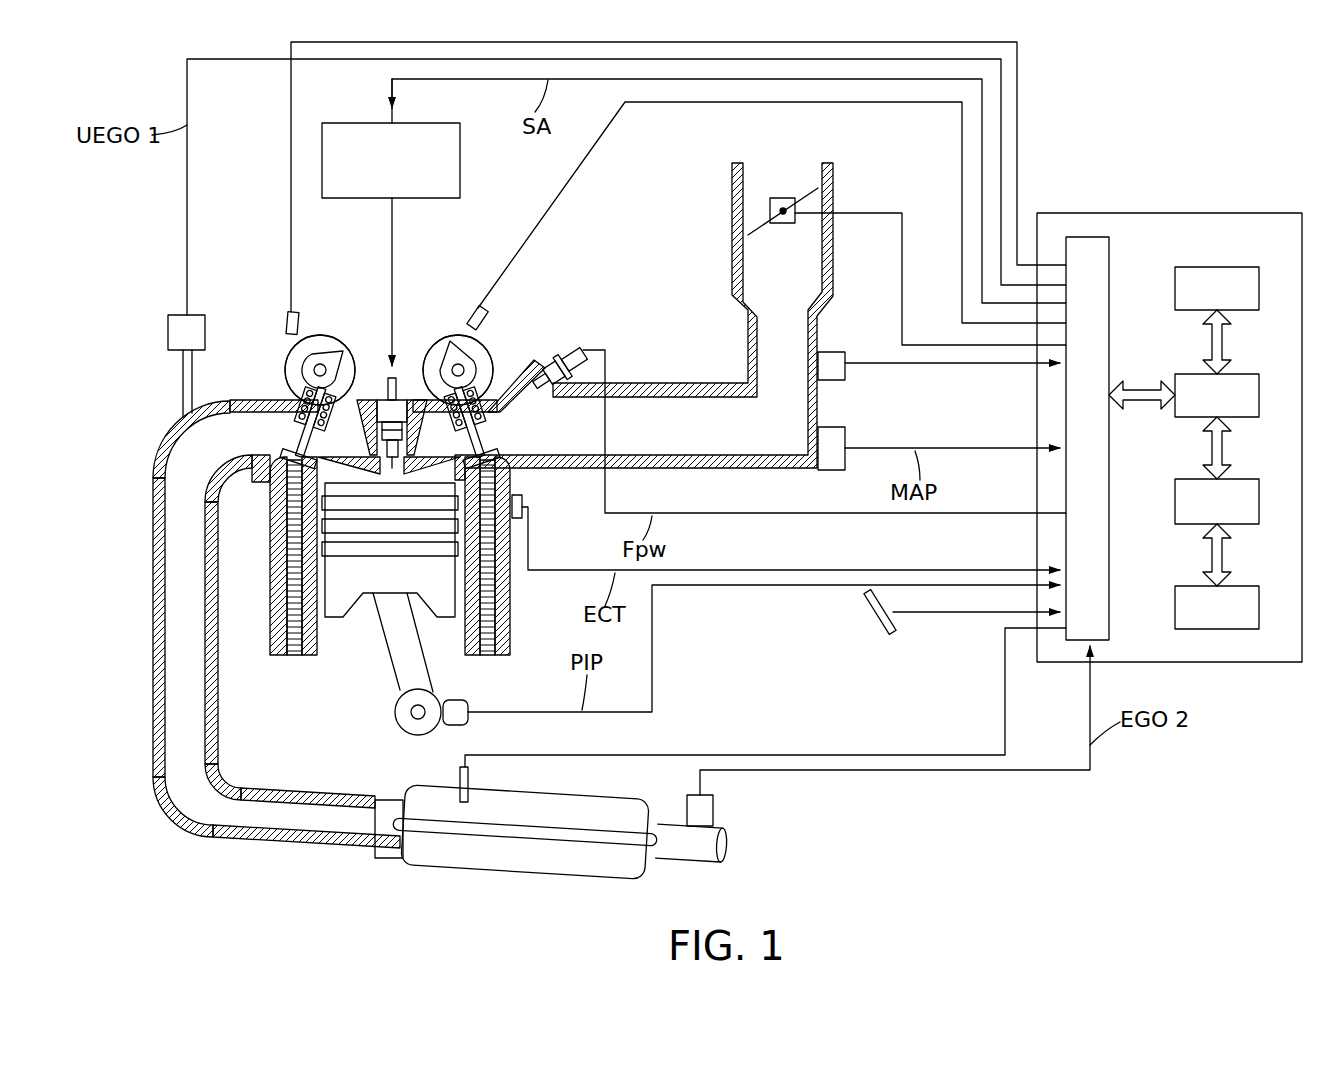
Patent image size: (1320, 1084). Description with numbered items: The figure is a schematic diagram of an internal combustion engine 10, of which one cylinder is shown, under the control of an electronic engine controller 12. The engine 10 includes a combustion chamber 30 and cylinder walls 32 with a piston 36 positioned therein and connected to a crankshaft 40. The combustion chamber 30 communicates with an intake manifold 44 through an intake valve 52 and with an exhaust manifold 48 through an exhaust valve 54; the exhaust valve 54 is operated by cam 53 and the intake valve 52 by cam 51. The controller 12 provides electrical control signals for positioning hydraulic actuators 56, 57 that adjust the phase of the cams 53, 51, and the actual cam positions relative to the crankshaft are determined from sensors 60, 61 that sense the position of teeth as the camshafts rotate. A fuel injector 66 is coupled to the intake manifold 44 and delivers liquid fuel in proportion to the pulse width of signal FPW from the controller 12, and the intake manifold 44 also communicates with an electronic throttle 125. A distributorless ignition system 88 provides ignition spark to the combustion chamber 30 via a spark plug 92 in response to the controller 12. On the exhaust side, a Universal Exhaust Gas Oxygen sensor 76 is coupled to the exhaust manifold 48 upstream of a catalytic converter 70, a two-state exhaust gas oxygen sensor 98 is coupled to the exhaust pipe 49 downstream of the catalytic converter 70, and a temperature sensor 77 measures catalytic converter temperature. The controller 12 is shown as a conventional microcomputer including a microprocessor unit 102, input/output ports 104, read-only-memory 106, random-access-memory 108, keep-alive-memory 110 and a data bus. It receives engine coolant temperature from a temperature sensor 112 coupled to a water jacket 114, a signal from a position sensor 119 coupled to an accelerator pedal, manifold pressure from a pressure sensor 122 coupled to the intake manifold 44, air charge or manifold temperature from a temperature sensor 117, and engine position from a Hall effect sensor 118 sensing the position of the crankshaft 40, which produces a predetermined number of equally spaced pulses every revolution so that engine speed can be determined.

The internal combustion engine 10 is at (272, 398).
The electronic engine controller 12 is at (1243, 213).
The combustion chamber 30 is at (287, 530).
The cylinder walls 32 is at (318, 640).
The piston 36 is at (378, 577).
The crankshaft 40 is at (400, 733).
The intake manifold 44 is at (717, 440).
The exhaust manifold 48 is at (170, 517).
The exhaust pipe 49 is at (670, 860).
The cam 51 is at (478, 368).
The intake valve 52 is at (448, 455).
The cam 53 is at (297, 356).
The exhaust valve 54 is at (325, 455).
The hydraulic actuator 56 is at (333, 342).
The hydraulic actuator 57 is at (440, 343).
The sensor 60 is at (288, 318).
The sensor 61 is at (487, 310).
The fuel injector 66 is at (550, 355).
The catalytic converter 70 is at (458, 868).
The Universal Exhaust Gas Oxygen (UEGO) sensor 76 is at (193, 315).
The temperature sensor 77 is at (460, 775).
The distributorless ignition system 88 is at (460, 152).
The spark plug 92 is at (397, 385).
The two-state exhaust gas oxygen sensor 98 is at (718, 805).
The microprocessor unit 102 is at (1253, 374).
The input/output ports 104 is at (1109, 262).
The read-only-memory 106 is at (1225, 267).
The random-access-memory 108 is at (1253, 479).
The keep-alive-memory 110 is at (1180, 586).
The temperature sensor 112 is at (525, 497).
The water jacket 114 is at (290, 657).
The temperature sensor 117 is at (843, 350).
The Hall effect sensor 118 is at (470, 706).
The position sensor 119 is at (868, 612).
The pressure sensor 122 is at (848, 430).
The electronic throttle 125 is at (777, 190).